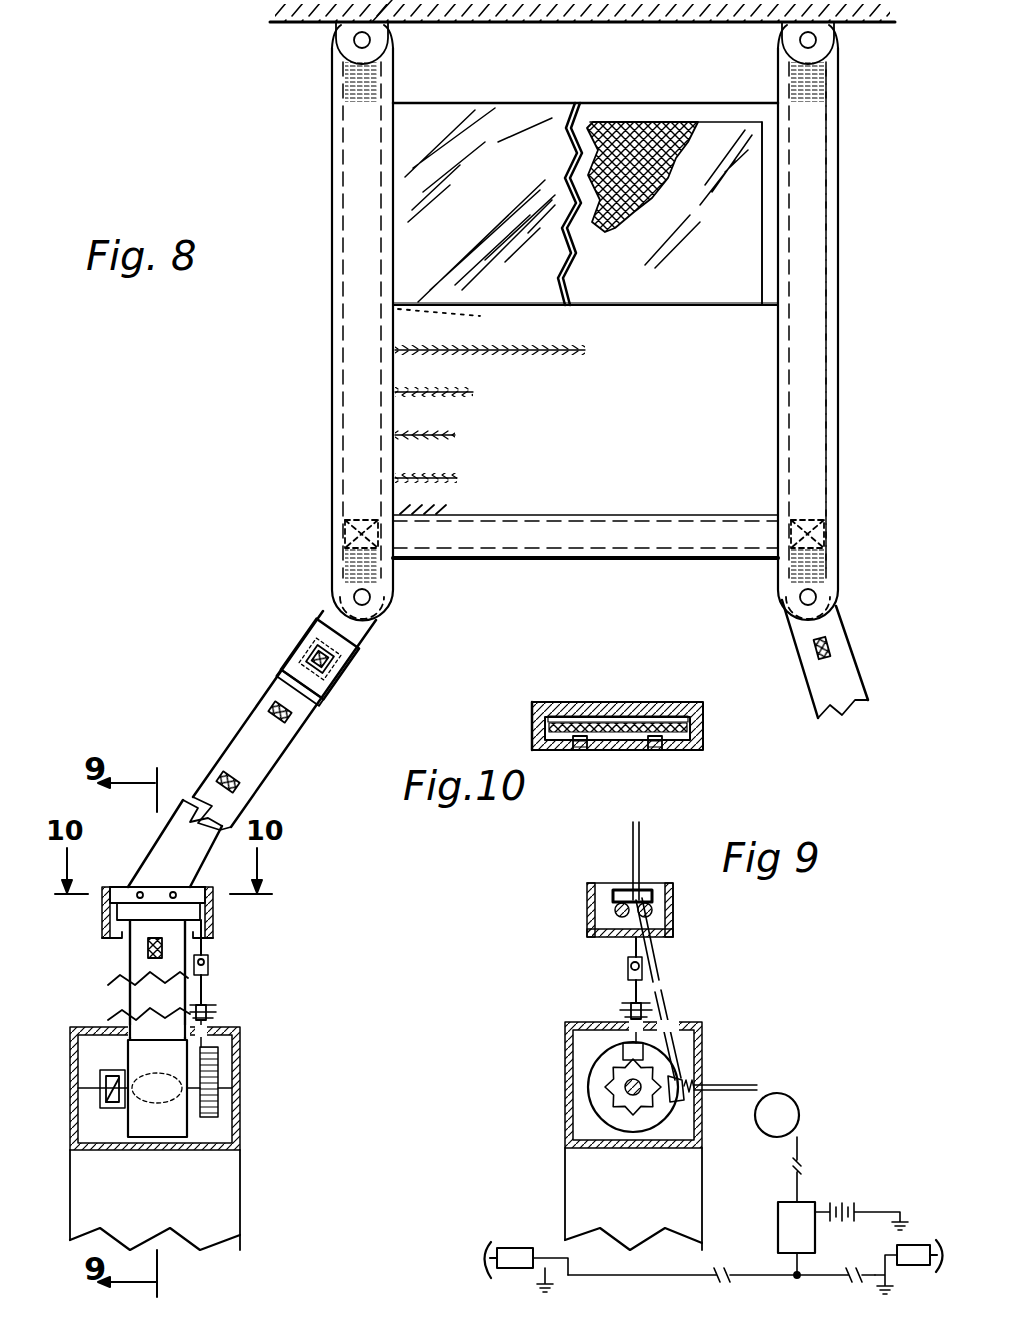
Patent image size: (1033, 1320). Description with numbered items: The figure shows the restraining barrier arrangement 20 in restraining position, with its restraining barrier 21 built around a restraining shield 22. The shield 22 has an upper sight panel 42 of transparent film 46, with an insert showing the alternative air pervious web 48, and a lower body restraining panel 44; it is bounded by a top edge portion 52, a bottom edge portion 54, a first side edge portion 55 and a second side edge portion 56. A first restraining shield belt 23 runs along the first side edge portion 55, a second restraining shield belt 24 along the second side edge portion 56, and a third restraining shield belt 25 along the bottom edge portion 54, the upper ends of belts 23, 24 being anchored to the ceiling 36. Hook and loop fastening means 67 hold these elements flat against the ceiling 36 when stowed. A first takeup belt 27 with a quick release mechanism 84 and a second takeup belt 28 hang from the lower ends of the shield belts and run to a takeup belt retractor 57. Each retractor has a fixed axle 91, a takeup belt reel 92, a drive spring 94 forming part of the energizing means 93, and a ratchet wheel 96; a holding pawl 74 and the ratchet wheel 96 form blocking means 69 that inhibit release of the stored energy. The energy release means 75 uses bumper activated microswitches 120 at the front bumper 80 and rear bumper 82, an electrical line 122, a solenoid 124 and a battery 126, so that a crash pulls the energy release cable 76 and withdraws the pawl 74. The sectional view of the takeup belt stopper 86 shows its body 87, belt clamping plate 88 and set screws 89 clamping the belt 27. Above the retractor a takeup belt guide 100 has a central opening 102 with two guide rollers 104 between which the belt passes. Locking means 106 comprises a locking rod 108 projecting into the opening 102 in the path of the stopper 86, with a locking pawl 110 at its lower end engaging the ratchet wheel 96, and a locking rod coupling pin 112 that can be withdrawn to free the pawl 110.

In FIG. 8, the restraining barrier arrangement 20 is at (240, 519).
In FIG. 8, the restraining barrier 21 is at (392, 607).
In FIG. 8, the restraining shield 22 is at (760, 330).
In FIG. 8, the first restraining shield belt 23 is at (333, 280).
In FIG. 8, the second restraining shield belt 24 is at (836, 434).
In FIG. 8, the third restraining shield belt 25 is at (590, 560).
In FIG. 8, the first takeup belt 27 is at (365, 640).
In FIG. 10, the first takeup belt 27 is at (590, 717).
In FIG. 9, the first takeup belt 27 is at (641, 828).
In FIG. 8, the second takeup belt 28 is at (840, 662).
In FIG. 8, the ceiling 36 is at (548, 28).
In FIG. 8, the upper sight panel 42 is at (400, 166).
In FIG. 8, the lower body restraining panel 44 is at (494, 380).
In FIG. 8, the transparent film 46 is at (522, 113).
In FIG. 8, the air pervious web 48 is at (606, 213).
In FIG. 8, the top edge portion 52 is at (600, 100).
In FIG. 8, the bottom edge portion 54 is at (596, 514).
In FIG. 8, the first side edge portion 55 is at (319, 233).
In FIG. 8, the second side edge portion 56 is at (777, 389).
In FIG. 8, the takeup belt retractor 57 is at (242, 1040).
In FIG. 9, the takeup belt retractor 57 is at (704, 1030).
In FIG. 8, the second releasable breakaway fastening means 67 is at (356, 78).
In FIG. 9, the blocking means 69 is at (678, 1111).
In FIG. 9, the holding pawl 74 is at (692, 1082).
In FIG. 9, the energy release means 75 is at (757, 1090).
In FIG. 9, the energy release cable 76 is at (752, 1085).
In FIG. 9, the front bumper 80 is at (478, 1243).
In FIG. 9, the rear bumper 82 is at (946, 1280).
In FIG. 8, the quick release mechanism 84 is at (300, 650).
In FIG. 8, the takeup belt stopper 86 is at (128, 886).
In FIG. 10, the takeup belt stopper 86 is at (650, 702).
In FIG. 9, the takeup belt stopper 86 is at (650, 888).
In FIG. 8, the stopper body 87 is at (101, 920).
In FIG. 10, the stopper body 87 is at (532, 713).
In FIG. 10, the belt clamping plate 88 is at (690, 728).
In FIG. 8, the set screws 89 is at (178, 887).
In FIG. 10, the set screws 89 is at (580, 750).
In FIG. 9, the fixed axle 91 is at (610, 1100).
In FIG. 8, the takeup belt reel 92 is at (128, 1130).
In FIG. 9, the takeup belt reel 92 is at (590, 1082).
In FIG. 8, the energizing means 93 is at (108, 1070).
In FIG. 8, the drive spring 94 is at (120, 1110).
In FIG. 9, the ratchet wheel 96 is at (640, 1104).
In FIG. 8, the takeup belt guide 100 is at (208, 886).
In FIG. 9, the takeup belt guide 100 is at (587, 890).
In FIG. 8, the central opening 102 is at (214, 925).
In FIG. 9, the central opening 102 is at (606, 882).
In FIG. 8, the guide rollers 104 is at (146, 917).
In FIG. 9, the guide rollers 104 is at (614, 910).
In FIG. 8, the locking means 106 is at (220, 1011).
In FIG. 9, the locking means 106 is at (612, 1005).
In FIG. 8, the locking rod 108 is at (206, 985).
In FIG. 9, the locking rod 108 is at (650, 962).
In FIG. 9, the locking pawl 110 is at (621, 1050).
In FIG. 8, the locking rod coupling pin 112 is at (212, 962).
In FIG. 9, the locking rod coupling pin 112 is at (652, 978).
In FIG. 9, the bumper activated microswitches 120 is at (516, 1247).
In FIG. 9, the electrical line 122 is at (740, 1272).
In FIG. 9, the solenoid 124 is at (778, 1210).
In FIG. 9, the battery 126 is at (844, 1200).